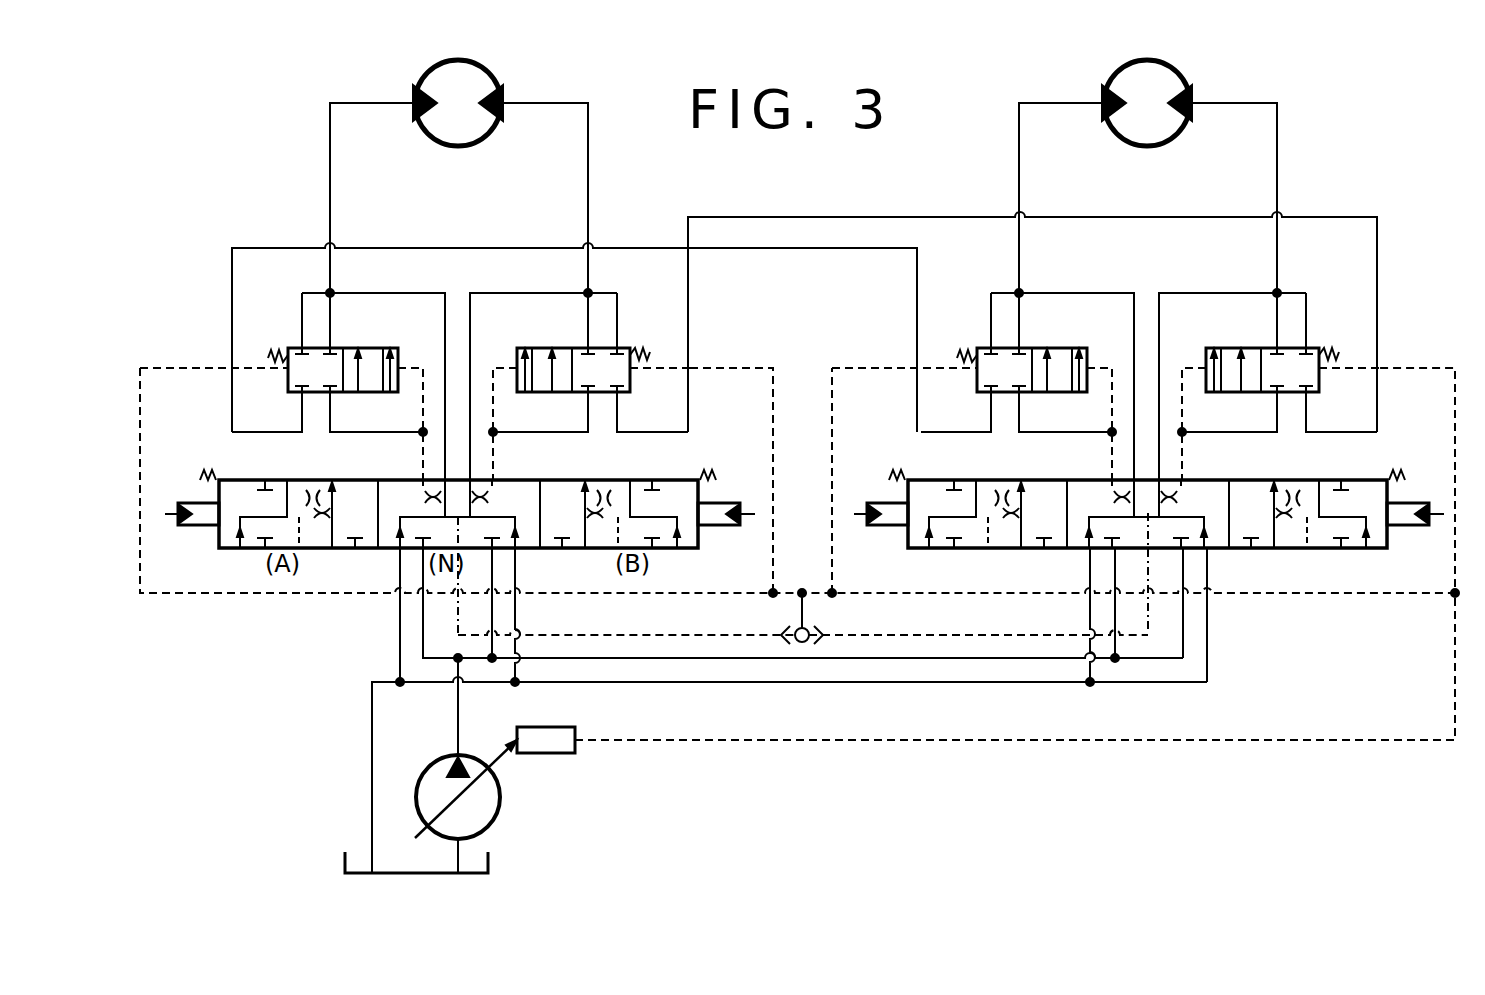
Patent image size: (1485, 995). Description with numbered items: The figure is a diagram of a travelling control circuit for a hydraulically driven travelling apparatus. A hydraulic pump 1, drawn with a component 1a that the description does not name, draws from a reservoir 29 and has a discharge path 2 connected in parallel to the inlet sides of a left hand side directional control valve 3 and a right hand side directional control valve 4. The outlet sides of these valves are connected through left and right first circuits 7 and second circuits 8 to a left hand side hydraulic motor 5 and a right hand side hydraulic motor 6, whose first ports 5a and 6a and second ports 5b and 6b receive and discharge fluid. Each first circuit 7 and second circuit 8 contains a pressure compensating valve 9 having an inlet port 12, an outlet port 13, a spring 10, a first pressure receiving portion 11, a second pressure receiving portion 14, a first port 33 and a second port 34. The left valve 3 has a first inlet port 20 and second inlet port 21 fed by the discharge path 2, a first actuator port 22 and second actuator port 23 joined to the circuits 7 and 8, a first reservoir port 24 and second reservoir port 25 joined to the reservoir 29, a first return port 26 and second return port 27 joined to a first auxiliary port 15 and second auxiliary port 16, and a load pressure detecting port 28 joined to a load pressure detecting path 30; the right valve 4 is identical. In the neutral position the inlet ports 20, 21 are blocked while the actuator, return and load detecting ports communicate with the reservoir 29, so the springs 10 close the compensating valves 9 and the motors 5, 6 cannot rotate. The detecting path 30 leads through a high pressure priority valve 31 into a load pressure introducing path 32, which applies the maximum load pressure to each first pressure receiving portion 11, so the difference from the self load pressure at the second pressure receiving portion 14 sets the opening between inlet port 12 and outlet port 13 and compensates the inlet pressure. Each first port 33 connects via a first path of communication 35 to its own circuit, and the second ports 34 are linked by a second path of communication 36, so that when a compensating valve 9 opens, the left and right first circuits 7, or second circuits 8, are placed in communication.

The hydraulic pump 1 is at (500, 800).
The pump regulator 1a is at (565, 752).
The discharge path 2 is at (458, 722).
The left hand side directional control valve 3 is at (700, 478).
The right hand side directional control valve 4 is at (1381, 478).
The left hand side hydraulic motor 5 is at (488, 76).
The first port 5a is at (508, 100).
The second port 5b is at (416, 92).
The right hand side hydraulic motor 6 is at (1177, 76).
The first port 6a is at (1194, 104).
The second port 6b is at (1105, 92).
The first circuit 7 is at (328, 178).
The second circuit 8 is at (590, 175).
The pressure compensating valve 9 is at (396, 346).
The spring 10 is at (268, 352).
The first pressure receiving portion 11 is at (288, 374).
The inlet port 12 is at (332, 395).
The outlet port 13 is at (333, 346).
The second pressure receiving portion 14 is at (432, 340).
The first auxiliary port 15 is at (380, 292).
The second auxiliary port 16 is at (507, 292).
The first inlet port 20 is at (423, 551).
The second inlet port 21 is at (492, 551).
The first actuator port 22 is at (425, 478).
The second actuator port 23 is at (492, 478).
The first reservoir port 24 is at (400, 550).
The second reservoir port 25 is at (515, 551).
The first return port 26 is at (440, 478).
The second return port 27 is at (470, 478).
The load pressure detecting port 28 is at (458, 551).
The reservoir 29 is at (490, 858).
The load pressure detecting path 30 is at (620, 634).
The high pressure priority valve 31 is at (800, 628).
The load pressure introducing path 32 is at (888, 598).
The first port 33 is at (298, 346).
The second port 34 is at (300, 396).
The first path of communication 35 is at (310, 292).
The second path of communication 36 is at (280, 247).